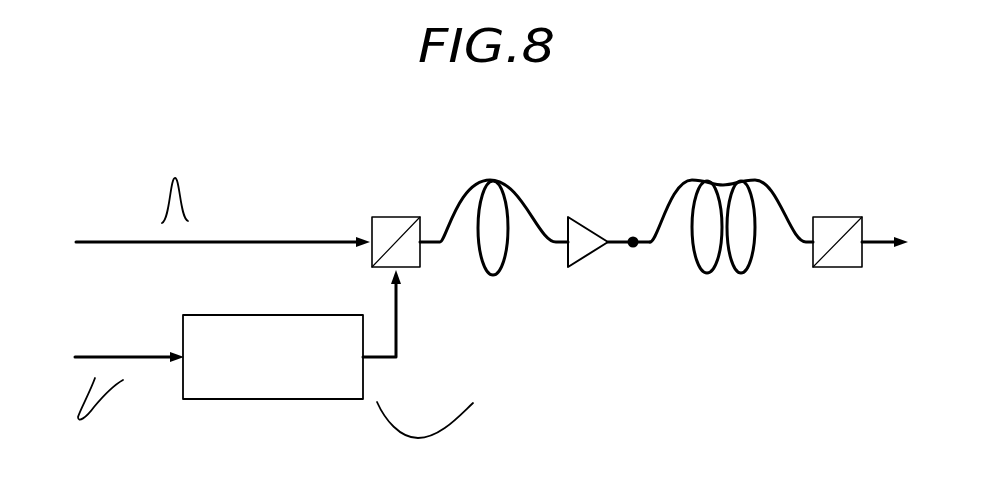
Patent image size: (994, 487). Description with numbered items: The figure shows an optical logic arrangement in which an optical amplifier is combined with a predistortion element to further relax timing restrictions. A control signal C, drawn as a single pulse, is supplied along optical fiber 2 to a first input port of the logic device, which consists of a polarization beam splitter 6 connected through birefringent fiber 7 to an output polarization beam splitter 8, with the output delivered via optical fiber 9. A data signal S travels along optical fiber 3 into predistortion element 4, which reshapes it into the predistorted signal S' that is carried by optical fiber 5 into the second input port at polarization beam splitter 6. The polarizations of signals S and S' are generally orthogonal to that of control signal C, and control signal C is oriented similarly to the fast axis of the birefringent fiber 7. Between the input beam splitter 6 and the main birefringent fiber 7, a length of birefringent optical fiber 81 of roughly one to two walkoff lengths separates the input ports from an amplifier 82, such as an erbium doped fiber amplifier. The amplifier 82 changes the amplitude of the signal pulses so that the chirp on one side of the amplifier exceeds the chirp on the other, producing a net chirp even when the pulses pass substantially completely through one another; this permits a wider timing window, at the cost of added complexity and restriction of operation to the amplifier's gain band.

The optical fiber 2 is at (128, 243).
The optical fiber 3 is at (126, 355).
The predistortion element 4 is at (242, 400).
The optical fiber 5 is at (398, 320).
The polarization beam splitter 6 is at (386, 216).
The birefringent fiber 7 is at (757, 178).
The output polarization beam splitter 8 is at (838, 216).
The optical fiber 9 is at (877, 240).
The birefringent optical fiber 81 is at (510, 178).
The amplifier 82 is at (575, 216).
The control signal C is at (222, 240).
The data signal S is at (113, 397).
The predistorted data signal S' is at (425, 399).